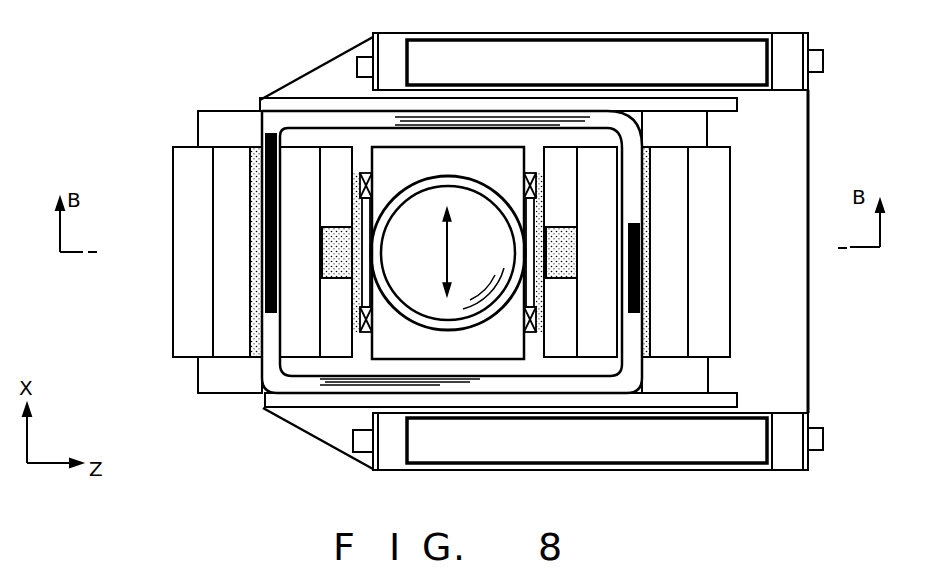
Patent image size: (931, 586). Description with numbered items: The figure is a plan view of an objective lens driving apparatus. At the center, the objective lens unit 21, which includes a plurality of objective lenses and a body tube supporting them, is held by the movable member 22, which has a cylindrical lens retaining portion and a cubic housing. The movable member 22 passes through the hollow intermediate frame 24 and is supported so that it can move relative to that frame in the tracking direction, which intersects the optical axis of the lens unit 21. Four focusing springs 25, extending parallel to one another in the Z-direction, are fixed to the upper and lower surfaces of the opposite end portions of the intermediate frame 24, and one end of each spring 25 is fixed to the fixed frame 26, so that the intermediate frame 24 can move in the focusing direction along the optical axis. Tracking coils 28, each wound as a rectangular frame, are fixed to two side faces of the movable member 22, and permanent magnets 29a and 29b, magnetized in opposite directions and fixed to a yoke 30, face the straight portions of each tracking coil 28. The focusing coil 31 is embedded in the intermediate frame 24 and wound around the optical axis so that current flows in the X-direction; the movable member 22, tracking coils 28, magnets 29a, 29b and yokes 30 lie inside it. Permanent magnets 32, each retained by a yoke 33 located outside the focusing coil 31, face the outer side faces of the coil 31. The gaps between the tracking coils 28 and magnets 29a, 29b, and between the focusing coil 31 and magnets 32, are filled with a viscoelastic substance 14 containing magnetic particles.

The viscoelastic substance 14 is at (257, 150).
The objective lens unit 21 is at (467, 207).
The movable member 22 is at (410, 160).
The intermediate frame 24 is at (340, 433).
The focusing springs 25 is at (645, 57).
The fixed frame 26 is at (773, 275).
The tracking coils 28 is at (362, 173).
The permanent magnet 29a is at (332, 160).
The permanent magnet 29b is at (558, 157).
The yoke 30 is at (598, 163).
The focusing coil 31 is at (283, 123).
The permanent magnets 32 is at (233, 240).
The yoke 33 is at (197, 318).